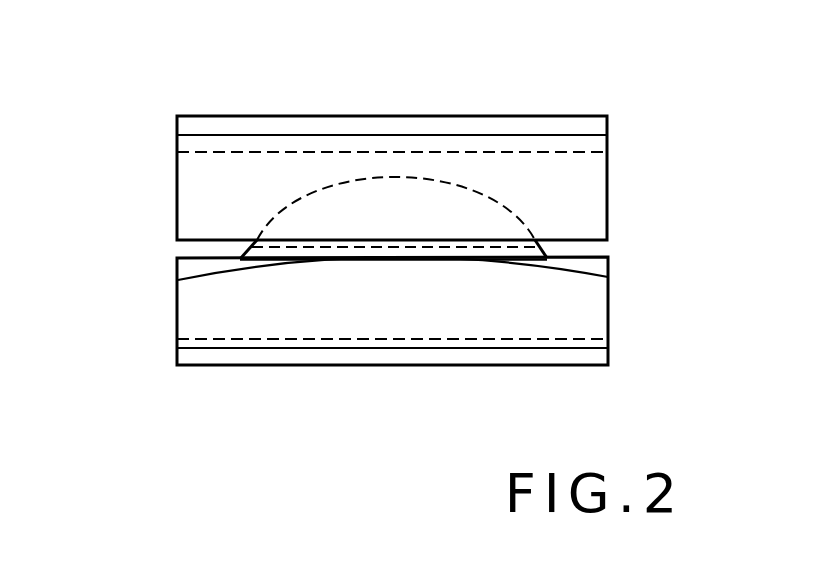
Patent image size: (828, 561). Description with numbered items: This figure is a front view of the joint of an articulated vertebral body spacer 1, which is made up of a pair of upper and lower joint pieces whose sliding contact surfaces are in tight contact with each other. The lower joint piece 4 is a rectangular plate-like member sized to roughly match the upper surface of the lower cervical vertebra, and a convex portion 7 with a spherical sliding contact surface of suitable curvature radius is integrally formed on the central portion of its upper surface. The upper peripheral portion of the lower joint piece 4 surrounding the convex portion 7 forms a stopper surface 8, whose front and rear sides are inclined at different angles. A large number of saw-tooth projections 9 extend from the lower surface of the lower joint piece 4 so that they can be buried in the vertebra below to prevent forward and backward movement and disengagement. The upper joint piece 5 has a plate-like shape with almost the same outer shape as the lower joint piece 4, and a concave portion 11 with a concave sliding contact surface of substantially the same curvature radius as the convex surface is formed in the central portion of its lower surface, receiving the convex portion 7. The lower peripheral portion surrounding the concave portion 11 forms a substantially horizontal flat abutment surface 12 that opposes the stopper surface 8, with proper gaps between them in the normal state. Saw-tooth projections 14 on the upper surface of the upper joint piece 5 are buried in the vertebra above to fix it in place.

The articulated vertebral body spacer 1 is at (70, 186).
The lower joint piece 4 is at (160, 305).
The upper joint piece 5 is at (160, 190).
The convex portion 7 is at (399, 177).
The stopper surface 8 is at (573, 262).
The saw-tooth projections 9 is at (317, 358).
The concave portion 11 is at (368, 181).
The abutment surface 12 is at (200, 242).
The saw-tooth projections 14 is at (255, 125).